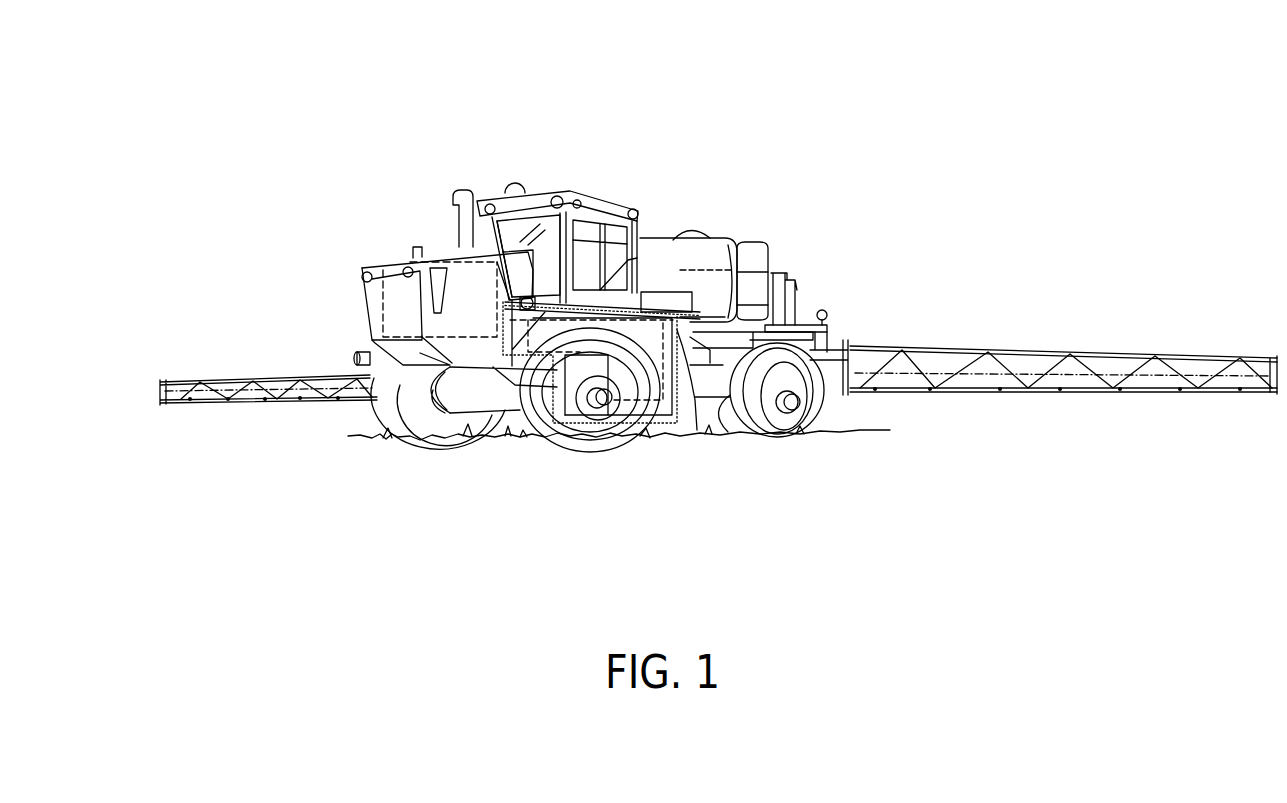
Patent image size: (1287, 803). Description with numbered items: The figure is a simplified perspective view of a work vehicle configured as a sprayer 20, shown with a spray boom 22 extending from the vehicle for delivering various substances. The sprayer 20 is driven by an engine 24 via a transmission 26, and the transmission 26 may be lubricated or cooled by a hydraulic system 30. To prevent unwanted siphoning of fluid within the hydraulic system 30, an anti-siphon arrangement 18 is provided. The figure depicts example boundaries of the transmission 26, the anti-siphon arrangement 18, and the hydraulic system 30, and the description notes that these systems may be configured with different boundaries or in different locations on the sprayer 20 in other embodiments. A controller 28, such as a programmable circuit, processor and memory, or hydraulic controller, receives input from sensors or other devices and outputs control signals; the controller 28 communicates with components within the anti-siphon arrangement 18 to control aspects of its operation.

The sprayer 20 is at (276, 126).
The spray boom 22 is at (1182, 316).
The engine 24 is at (409, 268).
The transmission 26 is at (518, 298).
The controller 28 is at (652, 292).
The anti-siphon arrangement 18 is at (608, 362).
The hydraulic system 30 is at (560, 422).